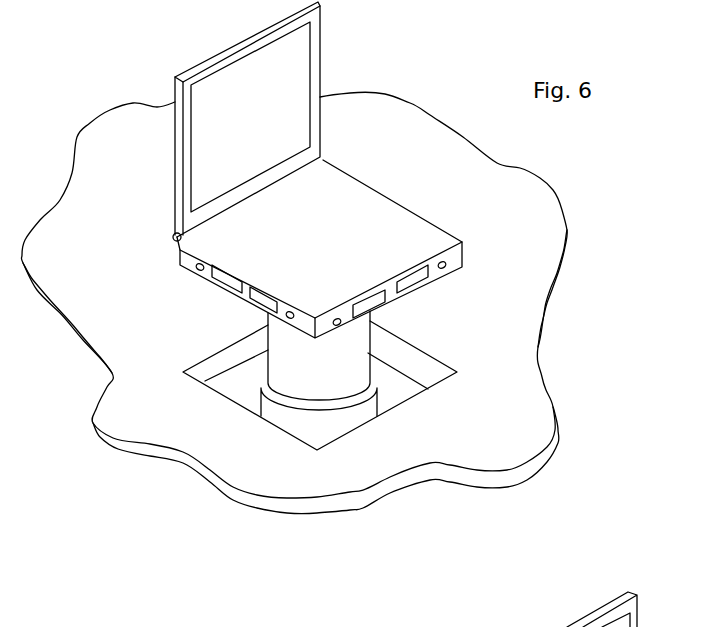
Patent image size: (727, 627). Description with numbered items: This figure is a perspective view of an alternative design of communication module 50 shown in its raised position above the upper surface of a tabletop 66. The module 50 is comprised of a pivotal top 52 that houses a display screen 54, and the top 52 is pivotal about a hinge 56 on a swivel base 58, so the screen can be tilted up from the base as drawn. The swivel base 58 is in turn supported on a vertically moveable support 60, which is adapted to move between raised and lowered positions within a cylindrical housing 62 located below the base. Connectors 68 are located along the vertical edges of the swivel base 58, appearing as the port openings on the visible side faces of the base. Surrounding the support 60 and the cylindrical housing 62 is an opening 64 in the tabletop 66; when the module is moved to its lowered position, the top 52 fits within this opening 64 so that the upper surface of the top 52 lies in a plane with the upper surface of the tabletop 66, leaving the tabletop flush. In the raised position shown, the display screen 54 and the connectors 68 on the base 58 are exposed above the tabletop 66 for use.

The module 50 is at (378, 163).
The pivotal top 52 is at (199, 119).
The display screen 54 is at (256, 130).
The hinge 56 is at (175, 237).
The swivel base 58 is at (322, 255).
The vertically moveable support 60 is at (335, 381).
The cylindrical housing 62 is at (343, 423).
The opening 64 is at (246, 378).
The tabletop 66 is at (527, 303).
The connectors 68 is at (415, 278).